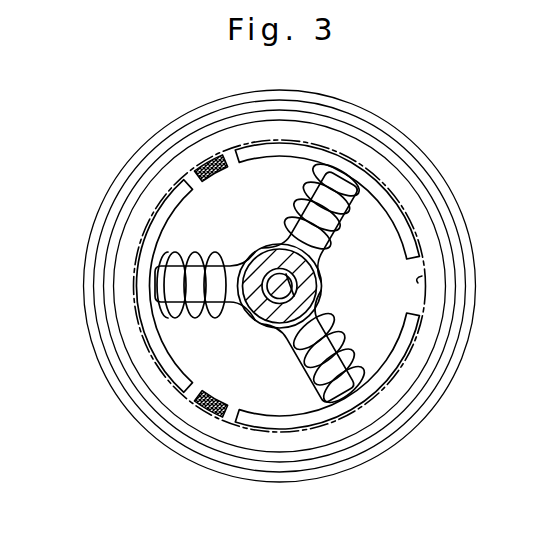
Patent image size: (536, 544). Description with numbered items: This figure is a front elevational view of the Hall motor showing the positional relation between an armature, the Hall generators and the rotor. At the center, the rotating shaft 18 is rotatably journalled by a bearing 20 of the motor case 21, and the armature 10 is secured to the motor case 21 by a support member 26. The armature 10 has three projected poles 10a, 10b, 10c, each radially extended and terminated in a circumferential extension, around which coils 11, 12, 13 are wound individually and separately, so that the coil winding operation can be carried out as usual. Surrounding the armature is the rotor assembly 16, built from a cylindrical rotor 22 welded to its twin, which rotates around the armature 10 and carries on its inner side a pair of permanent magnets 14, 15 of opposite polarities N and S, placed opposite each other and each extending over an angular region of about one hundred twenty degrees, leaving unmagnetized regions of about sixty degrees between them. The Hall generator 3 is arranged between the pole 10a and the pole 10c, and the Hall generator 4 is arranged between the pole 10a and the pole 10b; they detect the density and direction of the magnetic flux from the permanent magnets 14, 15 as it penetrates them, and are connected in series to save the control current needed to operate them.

The Hall generator 3 is at (205, 162).
The Hall generator 4 is at (205, 411).
The armature 10 is at (262, 243).
The projected pole 10a is at (143, 238).
The projected pole 10b is at (343, 406).
The projected pole 10c is at (368, 164).
The coil 11 is at (190, 255).
The coil 12 is at (308, 380).
The coil 13 is at (301, 244).
The permanent magnet 14 is at (145, 320).
The permanent magnet 15 is at (422, 276).
The rotor assembly 16 is at (418, 177).
The rotating shaft 18 is at (317, 283).
The bearing 20 is at (298, 273).
The motor case 21 is at (152, 425).
The cylindrical rotor 22 is at (425, 191).
The support member 26 is at (322, 298).